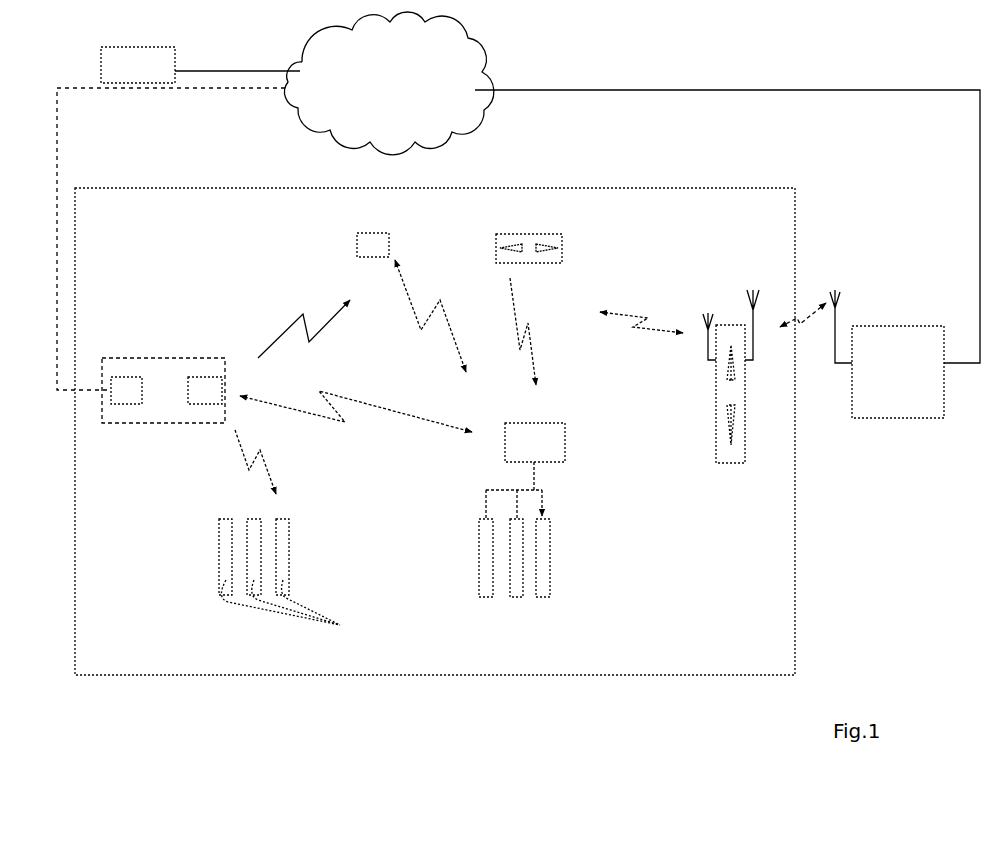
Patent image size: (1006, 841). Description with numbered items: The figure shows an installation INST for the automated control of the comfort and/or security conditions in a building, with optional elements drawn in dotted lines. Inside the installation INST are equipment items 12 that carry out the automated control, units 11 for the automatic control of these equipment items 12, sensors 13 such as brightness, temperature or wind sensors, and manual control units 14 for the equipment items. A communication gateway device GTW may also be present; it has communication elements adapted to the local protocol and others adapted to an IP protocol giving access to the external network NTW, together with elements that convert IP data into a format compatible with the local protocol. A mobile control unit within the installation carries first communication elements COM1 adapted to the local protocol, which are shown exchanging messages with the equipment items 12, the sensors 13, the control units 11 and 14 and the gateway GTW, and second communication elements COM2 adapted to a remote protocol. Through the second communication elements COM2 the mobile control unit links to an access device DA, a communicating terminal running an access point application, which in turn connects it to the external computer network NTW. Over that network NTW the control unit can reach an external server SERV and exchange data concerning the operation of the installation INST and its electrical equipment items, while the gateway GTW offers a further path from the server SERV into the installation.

The external server SERV is at (138, 65).
The external computer network NTW is at (322, 43).
The installation INST is at (192, 186).
The communication gateway device GTW is at (166, 425).
The units for the automatic control of the equipment items 11 is at (560, 433).
The equipment items 12 is at (486, 582).
The sensors 13 is at (383, 243).
The manual control units 14 is at (562, 245).
The first communication elements COM1 is at (686, 312).
The second communication elements COM2 is at (766, 312).
The access device DA is at (900, 420).